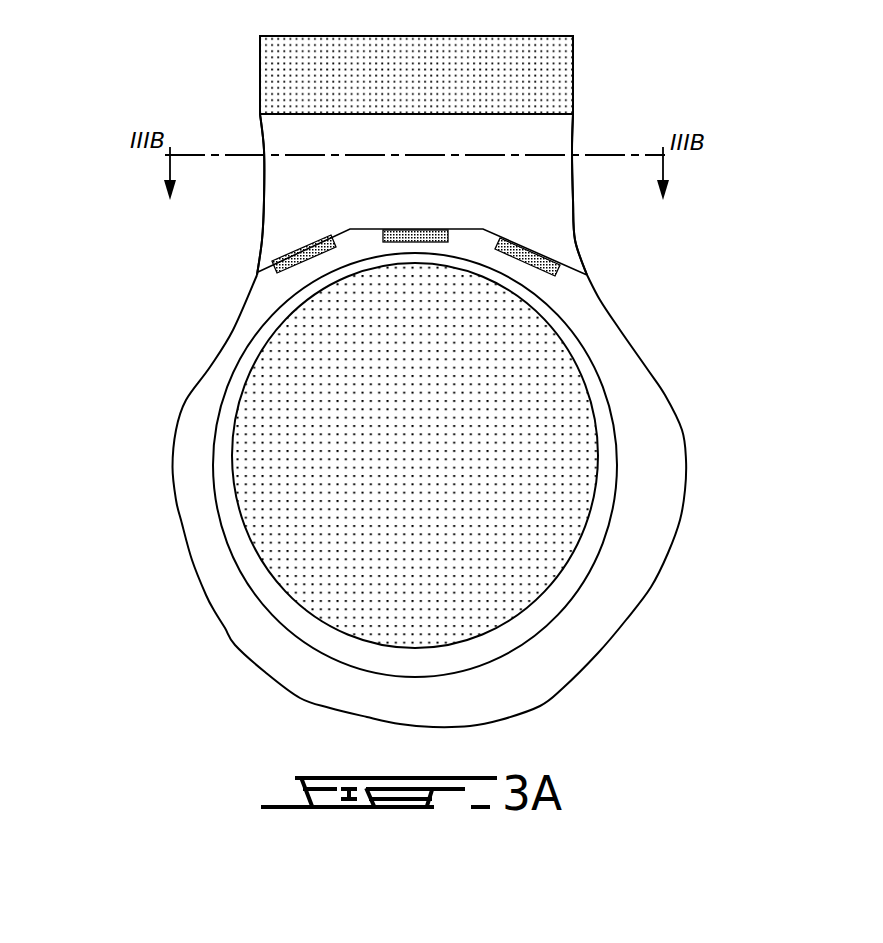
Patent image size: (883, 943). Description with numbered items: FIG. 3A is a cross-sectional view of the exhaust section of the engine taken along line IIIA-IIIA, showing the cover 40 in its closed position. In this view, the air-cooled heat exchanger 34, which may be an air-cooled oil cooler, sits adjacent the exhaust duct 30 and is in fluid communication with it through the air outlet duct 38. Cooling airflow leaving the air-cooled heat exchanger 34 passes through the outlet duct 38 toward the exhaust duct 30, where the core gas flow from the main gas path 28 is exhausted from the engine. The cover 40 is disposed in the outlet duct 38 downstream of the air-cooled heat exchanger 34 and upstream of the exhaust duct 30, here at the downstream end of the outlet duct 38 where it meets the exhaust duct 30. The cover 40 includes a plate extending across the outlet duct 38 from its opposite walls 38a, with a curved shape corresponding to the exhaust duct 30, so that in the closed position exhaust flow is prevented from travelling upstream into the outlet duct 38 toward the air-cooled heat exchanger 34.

The main gas path 28 is at (468, 433).
The exhaust duct 30 is at (597, 616).
The air-cooled heat exchanger 34 is at (520, 71).
The air outlet duct 38 is at (313, 180).
The opposite walls of the outlet duct 38a is at (262, 195).
The cover 40 is at (603, 271).